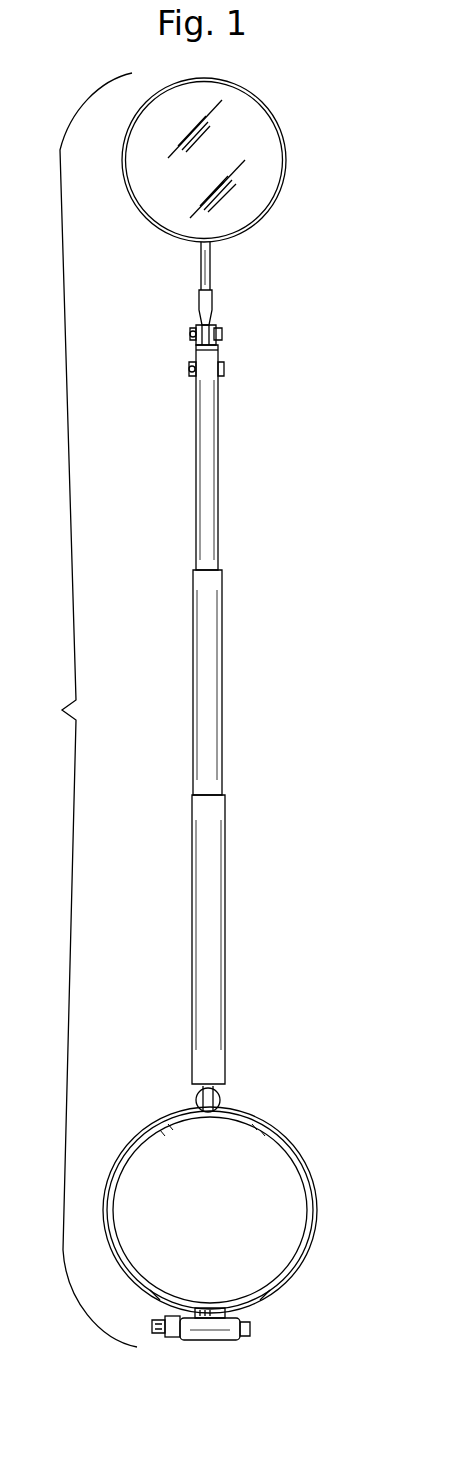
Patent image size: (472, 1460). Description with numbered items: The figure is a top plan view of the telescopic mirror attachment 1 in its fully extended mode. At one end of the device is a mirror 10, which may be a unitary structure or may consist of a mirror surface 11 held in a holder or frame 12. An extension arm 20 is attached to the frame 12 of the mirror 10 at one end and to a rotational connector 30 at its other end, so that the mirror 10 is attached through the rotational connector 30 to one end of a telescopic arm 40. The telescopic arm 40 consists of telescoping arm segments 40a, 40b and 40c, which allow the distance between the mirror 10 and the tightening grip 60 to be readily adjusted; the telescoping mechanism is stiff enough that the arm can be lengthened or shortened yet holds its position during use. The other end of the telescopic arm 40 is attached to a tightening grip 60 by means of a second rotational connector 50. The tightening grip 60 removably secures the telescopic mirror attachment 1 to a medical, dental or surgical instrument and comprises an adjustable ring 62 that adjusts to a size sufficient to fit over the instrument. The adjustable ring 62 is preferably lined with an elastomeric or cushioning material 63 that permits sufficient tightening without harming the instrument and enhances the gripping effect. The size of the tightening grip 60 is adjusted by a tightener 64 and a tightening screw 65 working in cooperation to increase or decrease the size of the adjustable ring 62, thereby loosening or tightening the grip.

The telescopic mirror attachment 1 is at (91, 710).
The mirror 10 is at (235, 146).
The mirror surface 11 is at (250, 200).
The frame 12 is at (288, 155).
The extension arm 20 is at (210, 262).
The rotational connector 30 is at (222, 335).
The telescopic arm 40 is at (284, 714).
The telescoping arm segment 40a is at (218, 500).
The telescoping arm segment 40b is at (222, 704).
The telescoping arm segment 40c is at (242, 939).
The second rotational connector 50 is at (222, 1097).
The tightening grip 60 is at (242, 1224).
The adjustable ring 62 is at (303, 1268).
The elastomeric or cushioning material 63 is at (306, 1196).
The tightener 64 is at (240, 1330).
The tightening screw 65 is at (150, 1330).